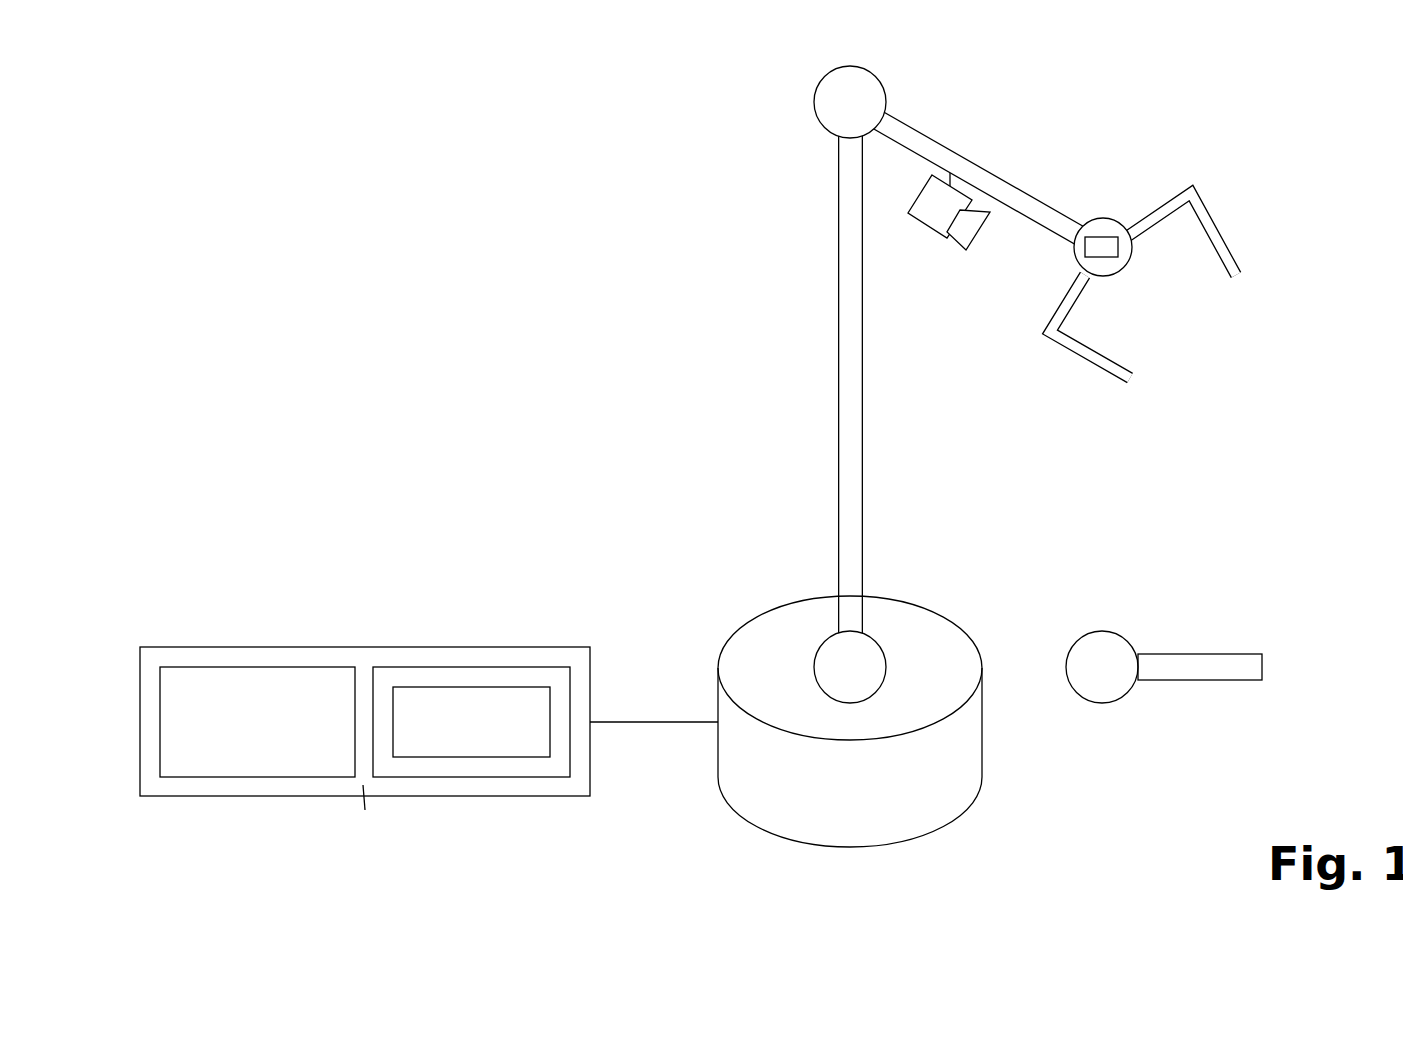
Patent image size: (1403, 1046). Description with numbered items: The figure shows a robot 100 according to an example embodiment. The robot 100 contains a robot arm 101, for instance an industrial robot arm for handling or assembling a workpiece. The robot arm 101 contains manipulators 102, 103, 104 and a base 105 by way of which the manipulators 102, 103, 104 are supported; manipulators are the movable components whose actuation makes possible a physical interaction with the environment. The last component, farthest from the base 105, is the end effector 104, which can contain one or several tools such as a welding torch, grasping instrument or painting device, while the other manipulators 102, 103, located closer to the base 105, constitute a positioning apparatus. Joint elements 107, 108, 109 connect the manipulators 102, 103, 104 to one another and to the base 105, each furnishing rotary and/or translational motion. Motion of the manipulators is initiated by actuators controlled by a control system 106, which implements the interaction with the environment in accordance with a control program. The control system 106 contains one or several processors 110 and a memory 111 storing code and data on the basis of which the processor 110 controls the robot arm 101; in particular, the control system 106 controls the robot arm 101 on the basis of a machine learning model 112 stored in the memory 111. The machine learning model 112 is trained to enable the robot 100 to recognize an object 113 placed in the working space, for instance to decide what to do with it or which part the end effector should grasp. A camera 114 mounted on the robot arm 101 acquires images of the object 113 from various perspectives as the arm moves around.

The robot 100 is at (1030, 150).
The robot arm 101 is at (795, 300).
The manipulator 102 is at (845, 430).
The manipulator 103 is at (988, 174).
The end effector 104 is at (1217, 237).
The base 105 is at (967, 740).
The control system 106 is at (365, 647).
The joint element 107 is at (833, 655).
The joint element 108 is at (814, 103).
The joint element 109 is at (1093, 236).
The processor 110 is at (280, 665).
The memory 111 is at (457, 667).
The machine learning model 112 is at (507, 687).
The object 113 is at (1107, 236).
The camera 114 is at (927, 228).